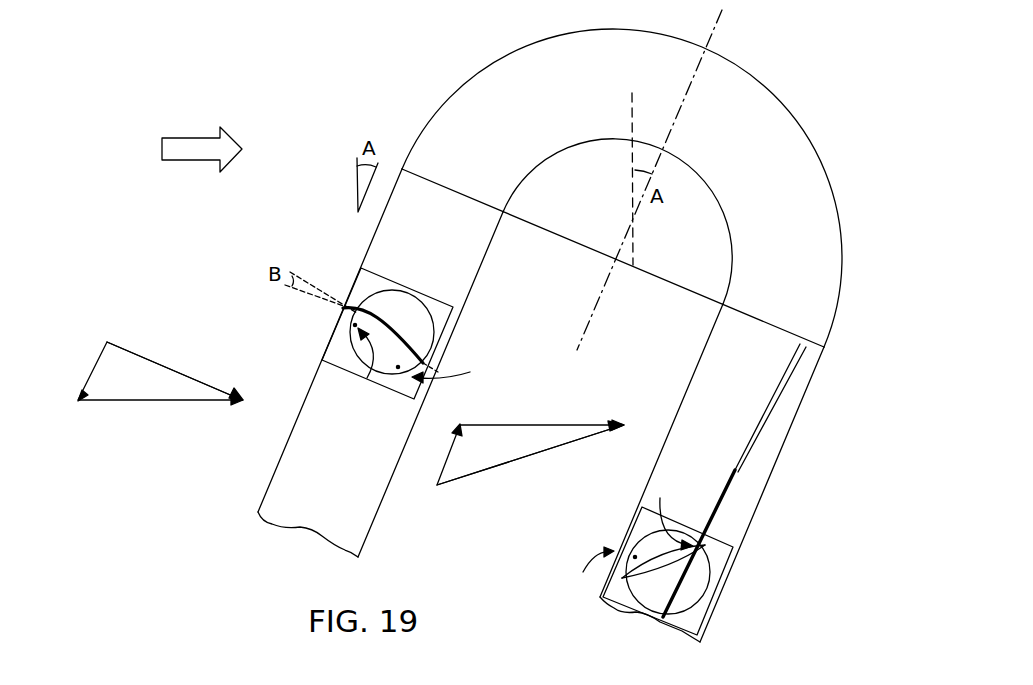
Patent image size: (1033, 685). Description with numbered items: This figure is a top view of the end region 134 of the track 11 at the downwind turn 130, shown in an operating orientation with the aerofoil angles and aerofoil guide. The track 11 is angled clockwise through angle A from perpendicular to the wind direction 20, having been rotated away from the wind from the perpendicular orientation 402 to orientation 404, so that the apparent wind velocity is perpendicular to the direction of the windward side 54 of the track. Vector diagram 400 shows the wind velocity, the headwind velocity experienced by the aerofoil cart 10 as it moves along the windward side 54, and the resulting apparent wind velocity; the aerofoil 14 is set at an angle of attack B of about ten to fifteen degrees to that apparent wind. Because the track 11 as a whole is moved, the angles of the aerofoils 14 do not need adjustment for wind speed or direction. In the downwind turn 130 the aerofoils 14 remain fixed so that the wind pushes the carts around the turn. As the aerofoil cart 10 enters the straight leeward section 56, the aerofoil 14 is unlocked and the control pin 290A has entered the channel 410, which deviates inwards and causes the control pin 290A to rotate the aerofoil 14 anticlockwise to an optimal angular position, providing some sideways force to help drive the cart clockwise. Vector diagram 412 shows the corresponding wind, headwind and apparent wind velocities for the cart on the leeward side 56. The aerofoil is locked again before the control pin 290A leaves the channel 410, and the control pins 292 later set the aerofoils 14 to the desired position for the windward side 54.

The downwind turn 130 is at (795, 117).
The end region 134 is at (256, 73).
The wind direction 20 is at (190, 138).
The perpendicular orientation 402 is at (628, 115).
The orientation 404 is at (688, 102).
The aerofoil cart 10 is at (362, 273).
The aerofoil 14 is at (403, 337).
The control pin 290A is at (522, 439).
The control pins 292 is at (513, 472).
The vector diagram 400 is at (130, 352).
The vector diagram 412 is at (582, 423).
The channel 410 is at (782, 390).
The track 11 is at (268, 478).
The windward side 54 is at (260, 502).
The leeward section 56 is at (772, 481).